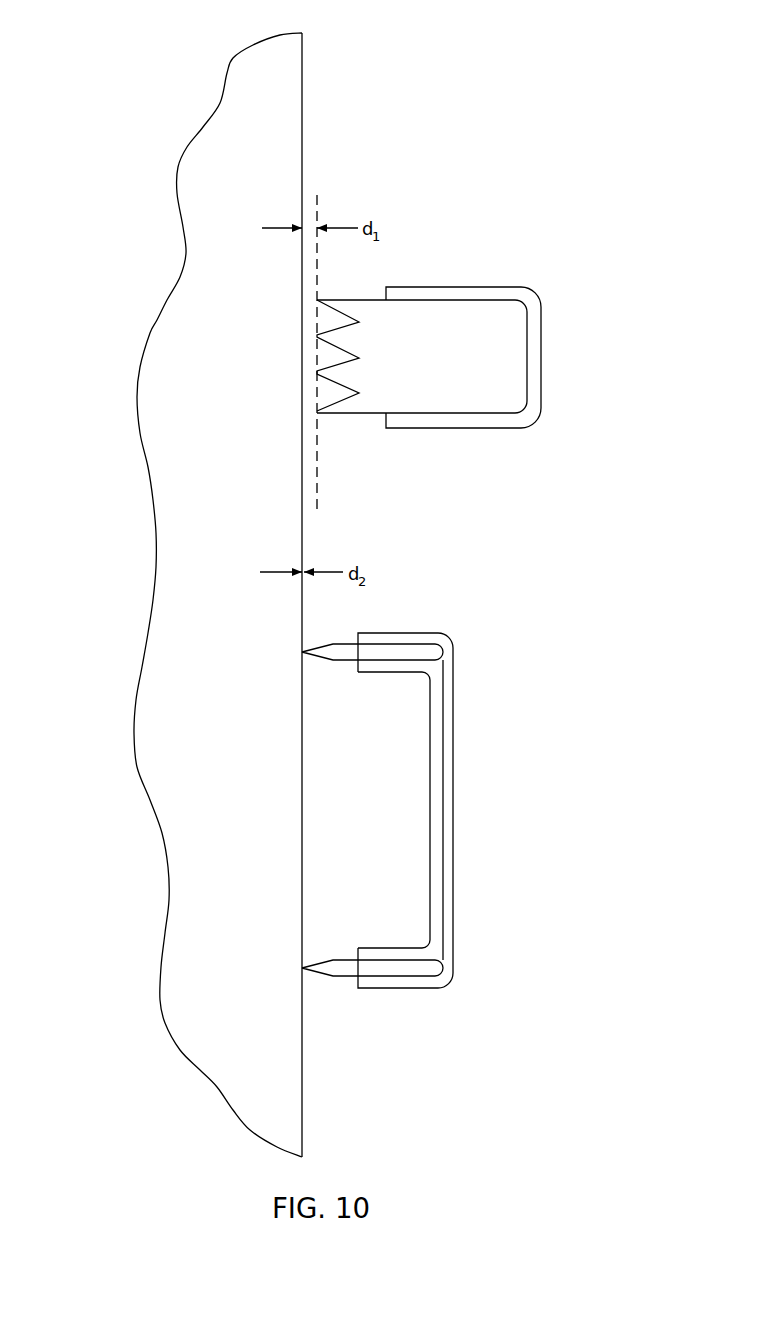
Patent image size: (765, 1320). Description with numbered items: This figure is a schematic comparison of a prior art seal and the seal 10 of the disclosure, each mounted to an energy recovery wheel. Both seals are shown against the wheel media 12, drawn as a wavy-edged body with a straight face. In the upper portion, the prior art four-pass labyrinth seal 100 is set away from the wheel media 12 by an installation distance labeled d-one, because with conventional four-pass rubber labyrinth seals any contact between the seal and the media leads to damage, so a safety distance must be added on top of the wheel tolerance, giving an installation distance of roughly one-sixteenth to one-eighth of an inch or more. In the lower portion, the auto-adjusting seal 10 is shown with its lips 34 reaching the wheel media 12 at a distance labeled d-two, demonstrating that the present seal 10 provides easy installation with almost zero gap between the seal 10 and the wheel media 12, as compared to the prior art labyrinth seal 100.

The wheel media 12 is at (141, 356).
The 4-pass labyrinth seal 100 is at (541, 355).
The seal 10 is at (377, 810).
The seal lip 34 is at (302, 652).